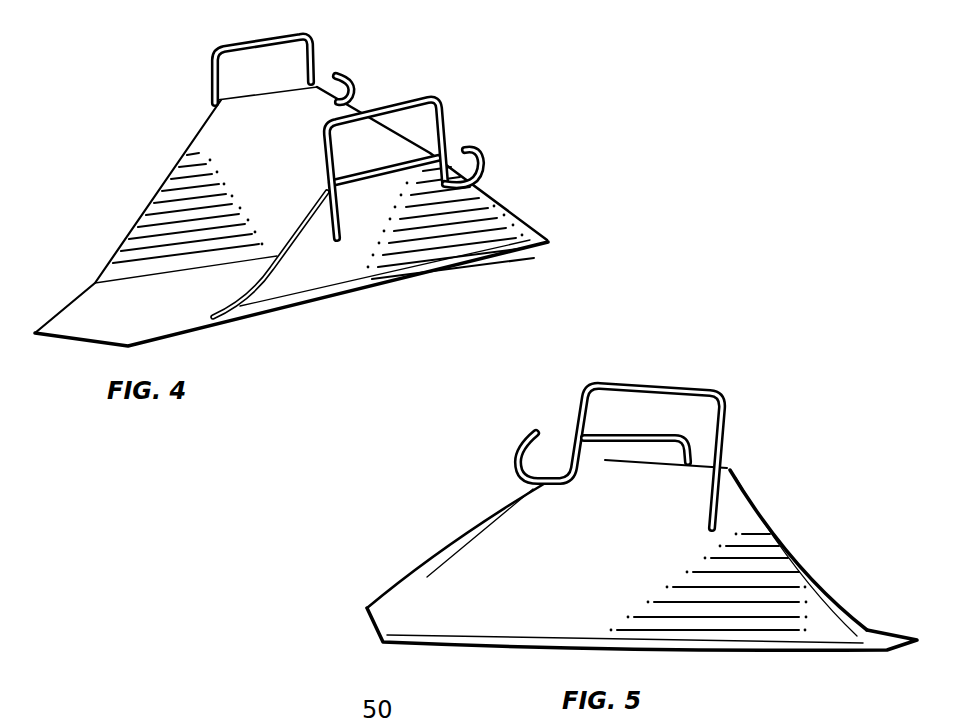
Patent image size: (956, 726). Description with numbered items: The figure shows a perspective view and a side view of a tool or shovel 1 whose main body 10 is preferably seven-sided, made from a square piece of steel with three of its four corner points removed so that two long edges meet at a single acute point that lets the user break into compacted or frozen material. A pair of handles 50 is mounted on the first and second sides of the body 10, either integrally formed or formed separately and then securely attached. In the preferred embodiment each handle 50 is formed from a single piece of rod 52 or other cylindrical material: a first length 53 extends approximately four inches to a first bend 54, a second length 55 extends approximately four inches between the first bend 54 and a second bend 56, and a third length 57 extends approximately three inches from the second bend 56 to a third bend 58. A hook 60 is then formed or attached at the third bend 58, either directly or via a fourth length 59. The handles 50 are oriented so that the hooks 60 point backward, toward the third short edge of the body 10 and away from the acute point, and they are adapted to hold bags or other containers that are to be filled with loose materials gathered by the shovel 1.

In FIG. 4, the shovel 1 is at (150, 166).
In FIG. 5, the shovel 1 is at (415, 534).
In FIG. 4, the main body 10 is at (497, 225).
In FIG. 5, the main body 10 is at (733, 510).
In FIG. 4, the handles 50 is at (410, 102).
In FIG. 5, the handles 50 is at (642, 420).
In FIG. 5, the rod 52 is at (651, 372).
In FIG. 5, the first length 53 is at (717, 463).
In FIG. 5, the first bend 54 is at (733, 410).
In FIG. 5, the second length 55 is at (690, 390).
In FIG. 5, the second bend 56 is at (580, 423).
In FIG. 5, the third length 57 is at (577, 420).
In FIG. 5, the third bend 58 is at (575, 485).
In FIG. 5, the fourth length 59 is at (545, 487).
In FIG. 5, the hook 60 is at (522, 455).